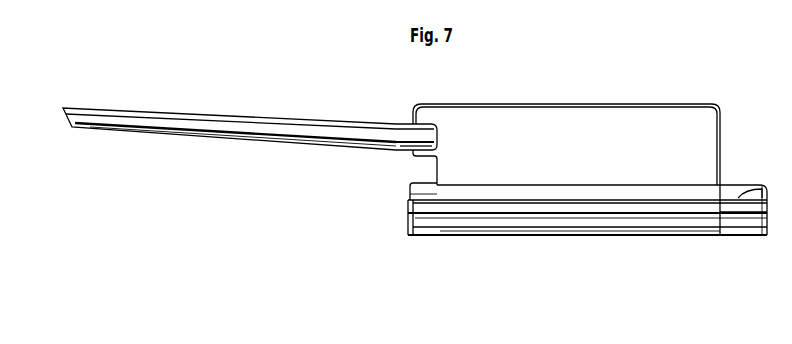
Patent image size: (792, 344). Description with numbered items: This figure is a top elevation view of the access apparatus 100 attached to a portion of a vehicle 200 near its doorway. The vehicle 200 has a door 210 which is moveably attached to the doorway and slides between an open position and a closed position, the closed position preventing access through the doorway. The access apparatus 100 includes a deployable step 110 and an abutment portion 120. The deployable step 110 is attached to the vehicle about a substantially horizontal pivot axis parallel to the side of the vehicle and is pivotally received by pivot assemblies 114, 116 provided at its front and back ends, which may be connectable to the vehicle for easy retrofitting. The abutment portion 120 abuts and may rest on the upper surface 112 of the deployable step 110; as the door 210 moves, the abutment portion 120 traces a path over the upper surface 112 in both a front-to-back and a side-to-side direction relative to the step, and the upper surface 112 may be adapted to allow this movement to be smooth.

The access apparatus 100 is at (598, 88).
The deployable step 110 is at (584, 161).
The upper surface 112 is at (673, 117).
The pivot assembly 114 is at (752, 198).
The pivot assembly 116 is at (421, 191).
The abutment portion 120 is at (412, 123).
The vehicle 200 is at (572, 262).
The door 210 is at (198, 124).